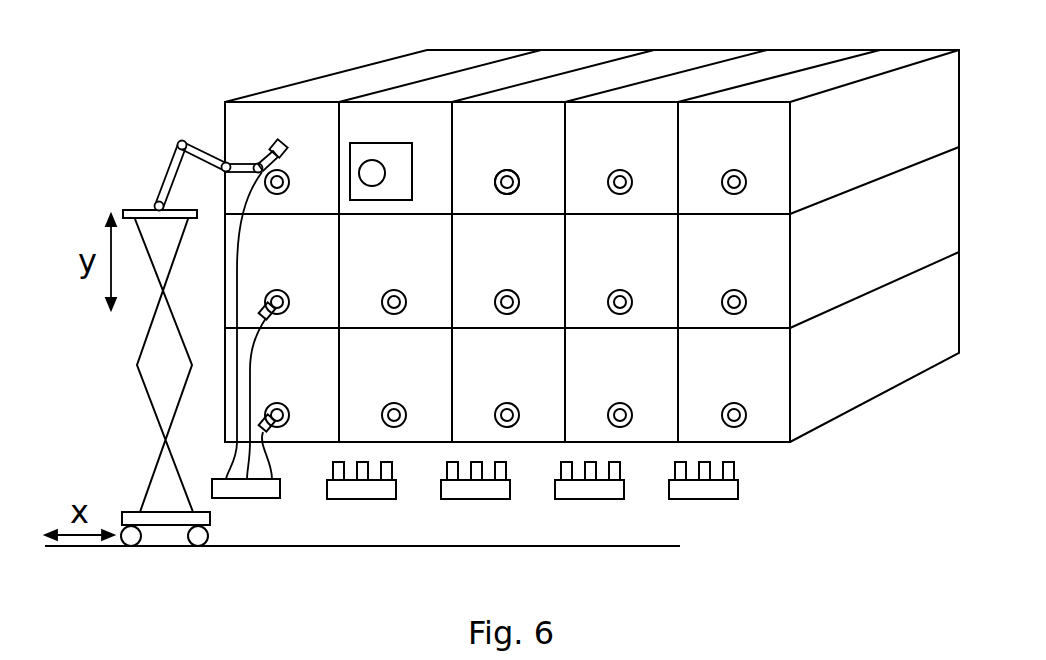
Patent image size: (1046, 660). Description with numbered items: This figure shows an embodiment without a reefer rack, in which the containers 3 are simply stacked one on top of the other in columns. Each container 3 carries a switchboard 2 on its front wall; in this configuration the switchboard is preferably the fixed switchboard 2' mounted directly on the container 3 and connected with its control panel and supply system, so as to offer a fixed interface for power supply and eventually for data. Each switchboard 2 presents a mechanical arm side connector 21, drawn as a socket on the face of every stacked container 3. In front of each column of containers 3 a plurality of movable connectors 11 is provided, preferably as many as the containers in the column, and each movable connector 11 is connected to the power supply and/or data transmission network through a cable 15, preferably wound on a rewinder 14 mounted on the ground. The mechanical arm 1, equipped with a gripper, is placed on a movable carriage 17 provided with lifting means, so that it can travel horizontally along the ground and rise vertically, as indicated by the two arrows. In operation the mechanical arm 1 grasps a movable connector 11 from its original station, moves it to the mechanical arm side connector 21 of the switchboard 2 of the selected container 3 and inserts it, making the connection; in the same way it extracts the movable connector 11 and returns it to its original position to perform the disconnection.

The mechanical arm 1 is at (162, 172).
The movable connector 11 is at (272, 148).
The mechanical arm side connector 21 is at (285, 172).
The container 3 is at (283, 88).
The switchboard 2 is at (381, 100).
The fixed switchboard 2' is at (511, 98).
The cable 15 is at (238, 266).
The movable carriage 17 is at (157, 458).
The rewinder 14 is at (280, 487).